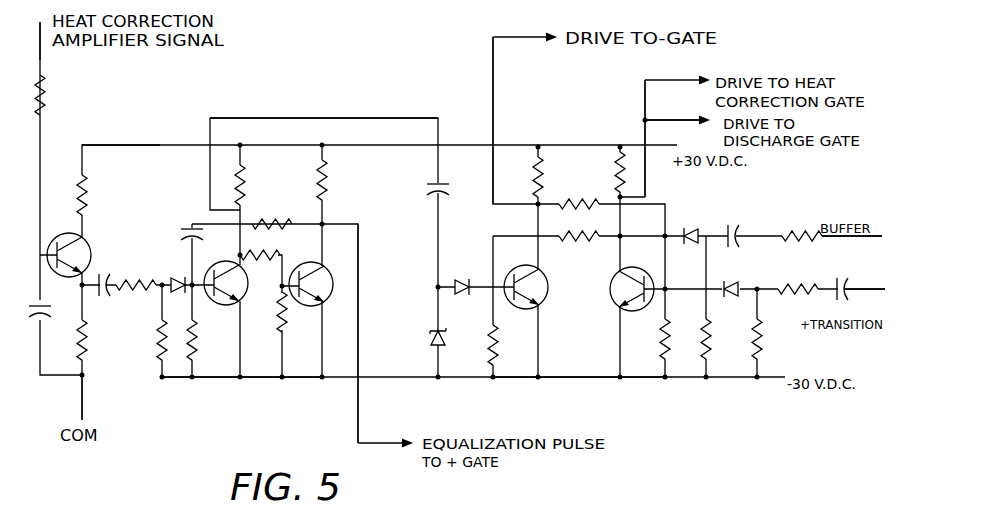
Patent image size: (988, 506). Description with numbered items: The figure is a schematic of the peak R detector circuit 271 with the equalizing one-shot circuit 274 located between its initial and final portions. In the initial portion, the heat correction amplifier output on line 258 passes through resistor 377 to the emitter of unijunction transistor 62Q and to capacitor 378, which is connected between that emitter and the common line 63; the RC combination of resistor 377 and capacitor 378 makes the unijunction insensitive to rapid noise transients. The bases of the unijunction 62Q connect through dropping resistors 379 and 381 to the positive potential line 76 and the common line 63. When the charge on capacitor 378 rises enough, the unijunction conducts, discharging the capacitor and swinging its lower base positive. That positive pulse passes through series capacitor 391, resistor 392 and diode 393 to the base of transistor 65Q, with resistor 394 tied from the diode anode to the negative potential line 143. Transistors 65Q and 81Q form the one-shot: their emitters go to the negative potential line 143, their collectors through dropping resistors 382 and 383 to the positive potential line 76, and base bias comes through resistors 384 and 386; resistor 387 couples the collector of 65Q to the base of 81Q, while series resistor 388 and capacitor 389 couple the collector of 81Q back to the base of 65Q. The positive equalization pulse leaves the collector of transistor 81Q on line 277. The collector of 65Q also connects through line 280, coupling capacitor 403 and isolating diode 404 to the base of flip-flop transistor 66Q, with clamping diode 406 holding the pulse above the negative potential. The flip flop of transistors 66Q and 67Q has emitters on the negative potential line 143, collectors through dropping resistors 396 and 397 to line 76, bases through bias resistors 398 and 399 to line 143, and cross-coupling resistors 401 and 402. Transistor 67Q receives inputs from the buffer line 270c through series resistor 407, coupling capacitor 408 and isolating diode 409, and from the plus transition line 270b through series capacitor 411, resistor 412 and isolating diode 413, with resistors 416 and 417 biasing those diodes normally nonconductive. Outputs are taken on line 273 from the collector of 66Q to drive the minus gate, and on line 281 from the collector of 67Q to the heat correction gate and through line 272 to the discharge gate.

The line 258 is at (40, 62).
The resistor 377 is at (46, 104).
The positive potential line 76 is at (150, 143).
The dropping resistor 379 is at (87, 189).
The unijunction transistor 62Q is at (88, 241).
The capacitor 378 is at (46, 322).
The dropping resistor 381 is at (84, 340).
The common line 63 is at (82, 400).
The series capacitor 391 is at (99, 293).
The resistor 392 is at (140, 290).
The diode 393 is at (177, 277).
The resistor 394 is at (159, 345).
The resistor 384 is at (195, 340).
The capacitor 389 is at (188, 229).
The transistor 65Q is at (234, 306).
The dropping resistor 382 is at (244, 178).
The dropping resistor 383 is at (327, 178).
The series resistor 388 is at (300, 209).
The resistor 387 is at (276, 252).
The resistor 386 is at (283, 333).
The transistor 81Q is at (333, 292).
The line 280 is at (396, 118).
The coupling capacitor 403 is at (433, 189).
The clamping diode 406 is at (434, 336).
The isolating diode 404 is at (462, 285).
The line 277 is at (362, 405).
The equalizing one-shot circuit 274 is at (281, 379).
The line 273 is at (496, 68).
The line 281 is at (643, 111).
The line 272 is at (656, 125).
The dropping resistor 396 is at (542, 172).
The dropping resistor 397 is at (615, 170).
The resistor 402 is at (592, 200).
The resistor 401 is at (596, 243).
The transistor 66Q is at (548, 292).
The bias resistor 398 is at (494, 338).
The transistor 67Q is at (622, 306).
The bias resistor 399 is at (663, 339).
The isolating diode 409 is at (696, 228).
The coupling capacitor 408 is at (737, 227).
The series resistor 407 is at (788, 232).
The buffer line 270c is at (840, 241).
The isolating diode 413 is at (751, 280).
The resistor 412 is at (807, 283).
The series capacitor 411 is at (845, 293).
The plus transition line 270b is at (858, 287).
The resistor 416 is at (710, 343).
The resistor 417 is at (762, 340).
The negative potential line 143 is at (558, 382).
The peak R detector circuit 271 is at (126, 435).